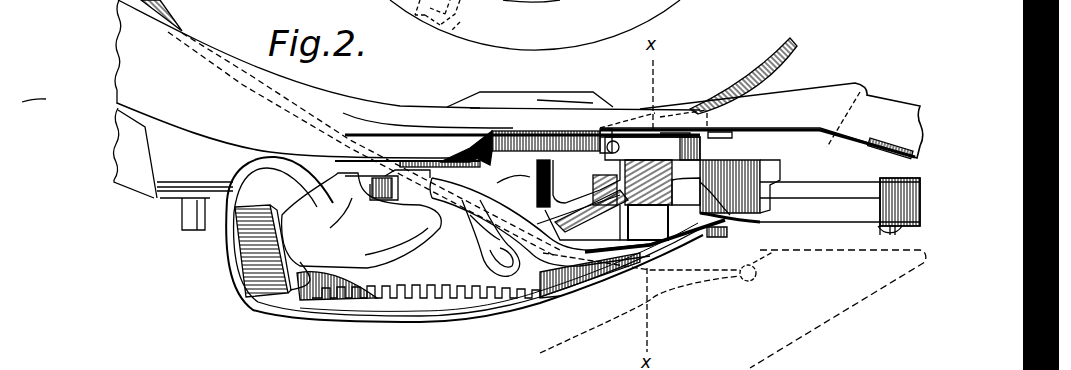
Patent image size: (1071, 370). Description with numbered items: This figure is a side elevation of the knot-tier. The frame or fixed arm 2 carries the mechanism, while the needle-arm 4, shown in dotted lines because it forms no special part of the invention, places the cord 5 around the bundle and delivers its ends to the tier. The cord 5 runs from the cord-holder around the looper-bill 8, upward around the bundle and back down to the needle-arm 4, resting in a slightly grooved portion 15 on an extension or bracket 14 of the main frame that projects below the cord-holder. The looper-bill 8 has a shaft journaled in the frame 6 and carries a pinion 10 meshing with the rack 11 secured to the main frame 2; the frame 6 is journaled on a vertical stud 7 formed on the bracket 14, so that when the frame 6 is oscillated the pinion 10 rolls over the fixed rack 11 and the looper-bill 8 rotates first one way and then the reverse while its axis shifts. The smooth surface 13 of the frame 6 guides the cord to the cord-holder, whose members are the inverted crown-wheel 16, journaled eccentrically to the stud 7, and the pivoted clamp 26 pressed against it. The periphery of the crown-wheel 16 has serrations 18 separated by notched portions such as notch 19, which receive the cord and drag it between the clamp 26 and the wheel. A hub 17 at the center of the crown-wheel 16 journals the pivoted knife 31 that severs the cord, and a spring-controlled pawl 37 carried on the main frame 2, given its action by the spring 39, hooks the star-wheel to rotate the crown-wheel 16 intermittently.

The frame or fixed arm 2 is at (761, 121).
The needle-arm 4 is at (733, 309).
The cord 5 is at (469, 57).
The frame 6 is at (601, 220).
The vertical stud 7 is at (582, 215).
The looper-bill 8 is at (470, 240).
The pinion 10 is at (263, 242).
The rack 11 is at (428, 285).
The smooth surface 13 is at (387, 197).
The extension or bracket 14 is at (578, 222).
The grooved portion 15 is at (562, 262).
The inverted crown-wheel 16 is at (558, 183).
The hub 17 is at (644, 222).
The serrations 18 is at (650, 182).
The notched portion 19 is at (701, 195).
The pivoted clamp 26 is at (768, 170).
The pivoted knife 31 is at (663, 135).
The spring-controlled pawl 37 is at (652, 148).
The spring 39 is at (533, 132).